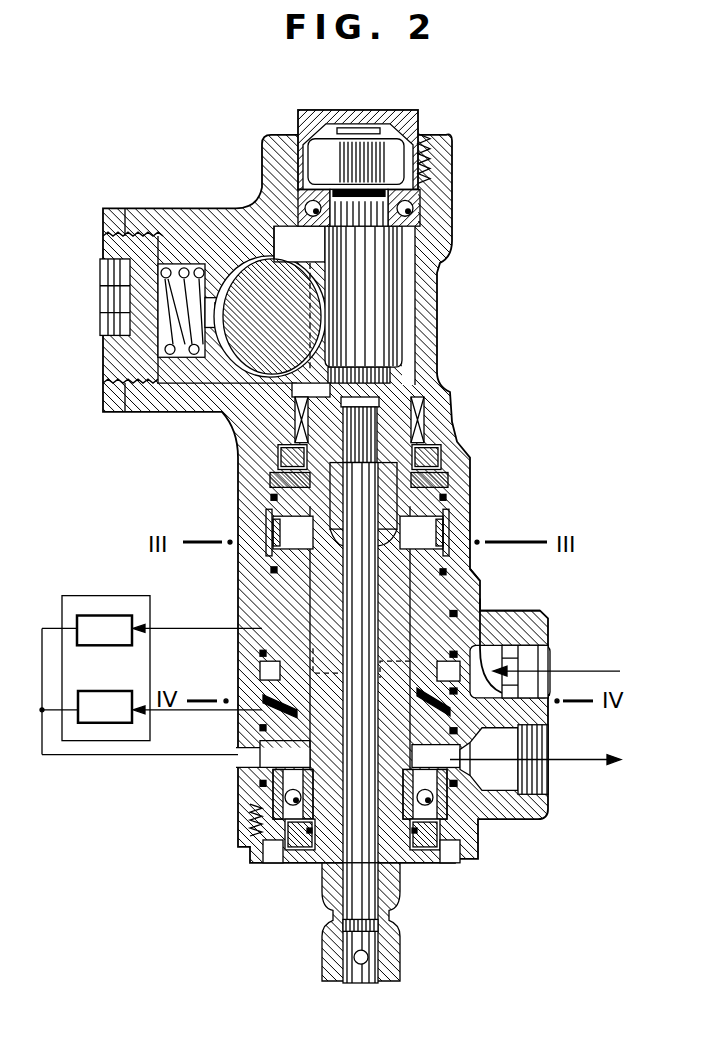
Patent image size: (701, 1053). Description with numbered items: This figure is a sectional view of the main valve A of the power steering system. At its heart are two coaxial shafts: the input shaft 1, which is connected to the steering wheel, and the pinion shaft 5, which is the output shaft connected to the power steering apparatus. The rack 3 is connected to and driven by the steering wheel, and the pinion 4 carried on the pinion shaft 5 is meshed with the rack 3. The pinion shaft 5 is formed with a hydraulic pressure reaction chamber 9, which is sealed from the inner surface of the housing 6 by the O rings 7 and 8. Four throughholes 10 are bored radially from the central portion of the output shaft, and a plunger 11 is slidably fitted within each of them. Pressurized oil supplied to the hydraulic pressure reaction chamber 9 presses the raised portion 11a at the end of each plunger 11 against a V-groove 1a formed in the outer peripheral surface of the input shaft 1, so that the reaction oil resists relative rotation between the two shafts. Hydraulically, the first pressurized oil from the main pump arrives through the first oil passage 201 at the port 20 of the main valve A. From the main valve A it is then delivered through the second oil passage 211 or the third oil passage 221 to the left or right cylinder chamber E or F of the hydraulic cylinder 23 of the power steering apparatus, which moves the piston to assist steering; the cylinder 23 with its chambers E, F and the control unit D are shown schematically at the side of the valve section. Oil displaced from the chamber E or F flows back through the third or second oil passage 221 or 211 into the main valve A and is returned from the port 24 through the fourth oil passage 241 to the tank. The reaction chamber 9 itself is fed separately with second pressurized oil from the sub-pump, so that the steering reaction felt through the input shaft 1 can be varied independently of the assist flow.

The input shaft 1 is at (330, 878).
The V-groove 1a is at (442, 500).
The rack 3 is at (270, 240).
The pinion 4 is at (390, 300).
The pinion shaft 5 is at (402, 420).
The housing 6 is at (250, 825).
The O ring 7 is at (442, 478).
The O ring 8 is at (468, 575).
The hydraulic pressure reaction chamber 9 is at (447, 527).
The throughholes 10 is at (440, 560).
The plunger 11 is at (466, 547).
The raised portion 11a is at (470, 600).
The port 20 is at (533, 665).
The first oil passage 201 is at (582, 673).
The hydraulic cylinder 23 is at (104, 652).
The port 24 is at (530, 748).
The fourth oil passage 241 is at (560, 765).
The second oil passage 211 is at (186, 626).
The third oil passage 221 is at (96, 762).
The main valve A is at (232, 767).
The shaft end D is at (456, 458).
The left cylinder chamber E is at (104, 631).
The right cylinder chamber F is at (105, 707).